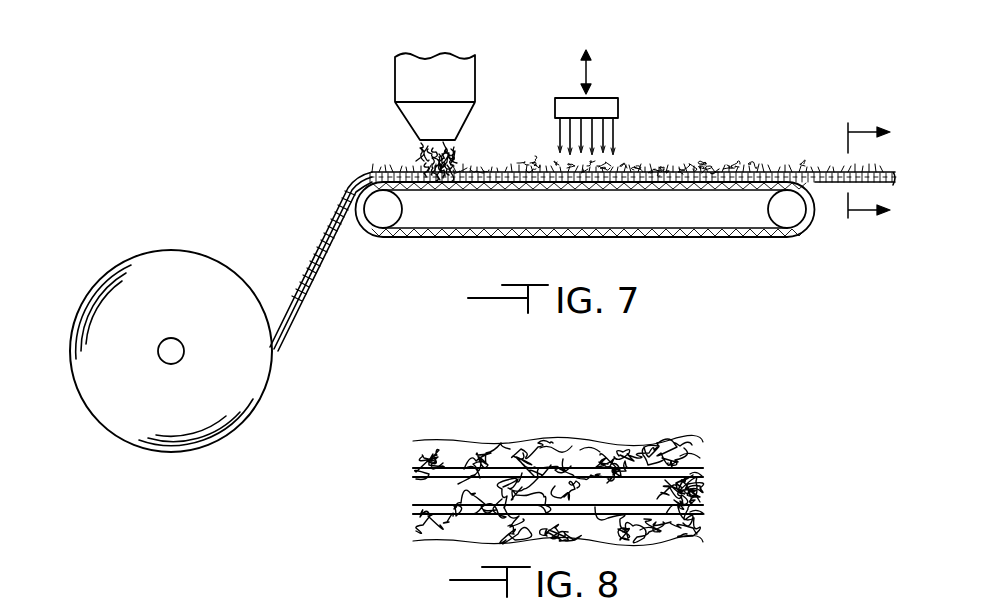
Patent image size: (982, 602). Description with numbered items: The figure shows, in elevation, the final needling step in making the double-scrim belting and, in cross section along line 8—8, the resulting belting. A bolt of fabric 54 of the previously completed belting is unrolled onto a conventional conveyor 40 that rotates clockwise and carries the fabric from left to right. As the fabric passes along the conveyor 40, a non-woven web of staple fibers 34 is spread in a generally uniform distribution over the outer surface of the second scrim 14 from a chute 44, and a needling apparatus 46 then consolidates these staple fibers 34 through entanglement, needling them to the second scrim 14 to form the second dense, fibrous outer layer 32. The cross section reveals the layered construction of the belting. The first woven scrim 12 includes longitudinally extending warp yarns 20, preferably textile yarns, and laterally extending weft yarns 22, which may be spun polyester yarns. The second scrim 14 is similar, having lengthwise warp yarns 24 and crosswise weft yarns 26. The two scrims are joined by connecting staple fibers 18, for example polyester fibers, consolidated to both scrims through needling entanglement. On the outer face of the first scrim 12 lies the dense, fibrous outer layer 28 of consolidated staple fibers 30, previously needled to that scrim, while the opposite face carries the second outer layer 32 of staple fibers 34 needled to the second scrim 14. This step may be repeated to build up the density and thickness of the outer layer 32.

In FIG. 8, the first woven scrim 12 is at (412, 473).
In FIG. 8, the second scrim 14 is at (413, 507).
In FIG. 8, the connecting staple fibers 18 is at (700, 490).
In FIG. 8, the warp yarns 20 is at (702, 476).
In FIG. 8, the weft yarns 22 is at (592, 448).
In FIG. 8, the warp yarns 24 is at (705, 512).
In FIG. 8, the weft yarns 26 is at (650, 530).
In FIG. 8, the fibrous outer layer 28 is at (412, 459).
In FIG. 8, the staple fibers 30 is at (555, 440).
In FIG. 8, the second fibrous outer layer 32 is at (415, 531).
In FIG. 7, the staple fibers 34 is at (425, 155).
In FIG. 8, the staple fibers 34 is at (520, 535).
In FIG. 7, the conveyor 40 is at (793, 240).
In FIG. 7, the chute 44 is at (400, 76).
In FIG. 7, the needling apparatus 46 is at (576, 109).
In FIG. 7, the bolt of fabric 54 is at (207, 266).
In FIG. 7, the section line 8— 8 is at (869, 175).